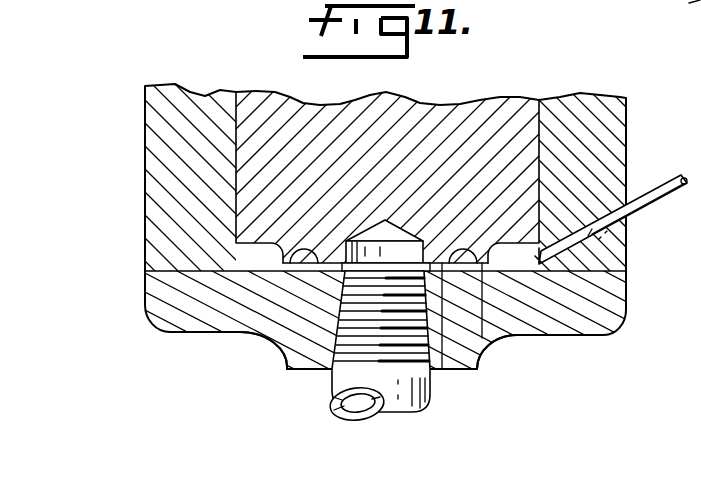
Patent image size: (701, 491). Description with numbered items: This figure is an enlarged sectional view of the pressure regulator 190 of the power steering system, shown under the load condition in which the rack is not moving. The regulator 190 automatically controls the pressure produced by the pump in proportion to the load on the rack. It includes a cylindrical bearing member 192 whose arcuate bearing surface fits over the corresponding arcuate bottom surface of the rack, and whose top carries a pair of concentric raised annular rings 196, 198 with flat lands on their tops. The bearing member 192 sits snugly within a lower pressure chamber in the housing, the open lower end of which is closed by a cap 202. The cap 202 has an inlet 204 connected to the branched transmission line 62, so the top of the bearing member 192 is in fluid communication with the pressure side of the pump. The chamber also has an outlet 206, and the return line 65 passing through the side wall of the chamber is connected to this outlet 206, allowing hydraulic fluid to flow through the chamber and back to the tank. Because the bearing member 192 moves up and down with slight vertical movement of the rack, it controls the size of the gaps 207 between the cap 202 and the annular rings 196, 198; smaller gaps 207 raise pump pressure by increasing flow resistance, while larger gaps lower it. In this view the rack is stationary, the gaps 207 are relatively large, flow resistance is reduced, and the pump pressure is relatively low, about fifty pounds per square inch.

The pressure regulator 190 is at (386, 235).
The cylindrical bearing member 192 is at (516, 103).
The cap 202 is at (627, 312).
The inlet 204 is at (292, 369).
The raised annular ring 198 is at (485, 352).
The raised annular ring 196 is at (448, 378).
The gaps 207 is at (288, 265).
The branched transmission line 62 is at (328, 392).
The return line 65 is at (652, 178).
The outlet 206 is at (534, 264).